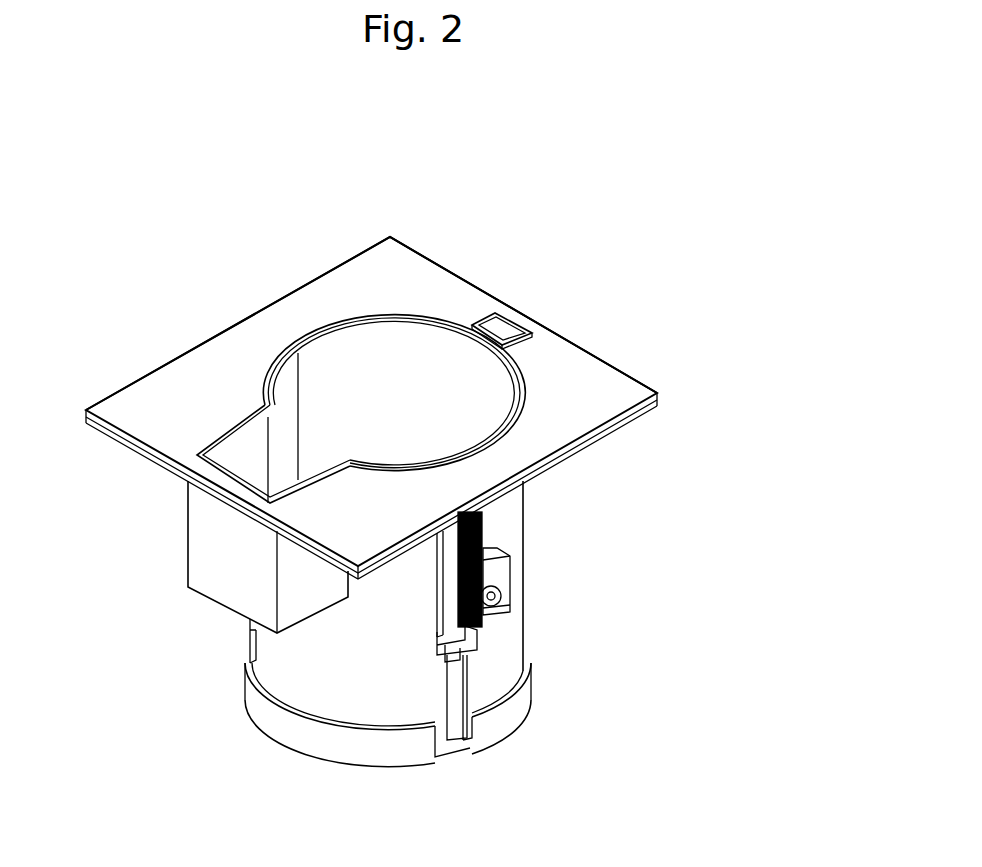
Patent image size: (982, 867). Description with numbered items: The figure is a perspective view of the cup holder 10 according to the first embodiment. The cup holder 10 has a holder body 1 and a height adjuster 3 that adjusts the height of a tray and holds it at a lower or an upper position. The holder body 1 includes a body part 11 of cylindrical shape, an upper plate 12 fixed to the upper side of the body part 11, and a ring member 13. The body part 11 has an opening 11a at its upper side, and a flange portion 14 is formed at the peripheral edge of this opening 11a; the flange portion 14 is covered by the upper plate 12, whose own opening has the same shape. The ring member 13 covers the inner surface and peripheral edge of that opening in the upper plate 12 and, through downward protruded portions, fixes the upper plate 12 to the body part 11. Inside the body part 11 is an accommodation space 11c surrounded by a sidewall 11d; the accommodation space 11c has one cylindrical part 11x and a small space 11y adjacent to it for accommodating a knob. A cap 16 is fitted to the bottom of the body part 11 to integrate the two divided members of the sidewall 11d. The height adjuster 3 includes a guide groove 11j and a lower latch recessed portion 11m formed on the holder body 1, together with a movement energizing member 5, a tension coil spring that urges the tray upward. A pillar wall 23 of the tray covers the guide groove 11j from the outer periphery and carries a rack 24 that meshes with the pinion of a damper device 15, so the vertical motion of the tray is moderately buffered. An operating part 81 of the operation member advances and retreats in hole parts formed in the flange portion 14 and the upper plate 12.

The holder body 1 is at (205, 340).
The height adjuster 3 is at (431, 616).
The movement energizing member 5 is at (487, 523).
The cup holder 10 is at (737, 371).
The body part 11 is at (527, 573).
The opening 11a is at (350, 352).
The accommodation space 11c is at (412, 393).
The sidewall 11d is at (308, 680).
The guide groove 11j is at (452, 682).
The lower latch recessed portion 11m is at (455, 742).
The cylindrical part 11x is at (477, 398).
The small space 11y is at (248, 465).
The upper plate 12 is at (592, 385).
The ring member 13 is at (278, 345).
The flange portion 14 is at (635, 425).
The damper device 15 is at (508, 595).
The cap 16 is at (510, 705).
The pillar wall 23 is at (450, 588).
The rack 24 is at (487, 543).
The operating part 81 is at (503, 330).